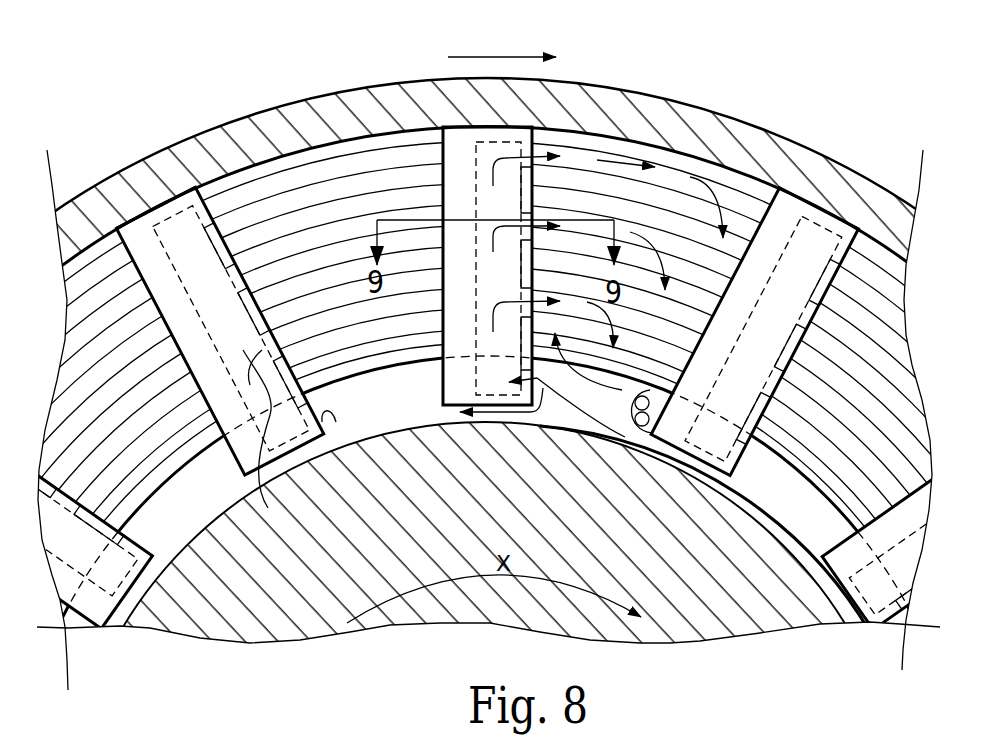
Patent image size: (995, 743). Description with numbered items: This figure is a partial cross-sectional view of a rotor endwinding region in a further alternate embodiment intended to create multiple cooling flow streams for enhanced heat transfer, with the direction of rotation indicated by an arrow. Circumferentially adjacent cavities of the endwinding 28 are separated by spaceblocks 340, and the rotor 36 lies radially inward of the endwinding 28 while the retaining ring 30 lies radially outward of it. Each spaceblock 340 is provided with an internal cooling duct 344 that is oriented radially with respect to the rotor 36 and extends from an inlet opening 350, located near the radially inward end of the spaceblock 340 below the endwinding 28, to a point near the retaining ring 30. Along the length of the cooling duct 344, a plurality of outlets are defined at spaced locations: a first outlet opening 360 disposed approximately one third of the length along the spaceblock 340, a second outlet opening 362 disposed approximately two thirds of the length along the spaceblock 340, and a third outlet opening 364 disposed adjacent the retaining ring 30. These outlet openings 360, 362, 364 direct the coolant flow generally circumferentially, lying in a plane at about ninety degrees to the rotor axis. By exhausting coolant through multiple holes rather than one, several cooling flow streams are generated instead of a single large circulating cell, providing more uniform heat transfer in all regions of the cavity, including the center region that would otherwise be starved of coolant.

The endwinding 28 is at (399, 394).
The retaining ring 30 is at (630, 117).
The rotor 36 is at (770, 485).
The spaceblock 340 is at (463, 170).
The internal cooling duct 344 is at (275, 443).
The inlet opening 350 is at (336, 422).
The first outlet opening 360 is at (262, 350).
The second outlet opening 362 is at (258, 292).
The third outlet opening 364 is at (205, 198).